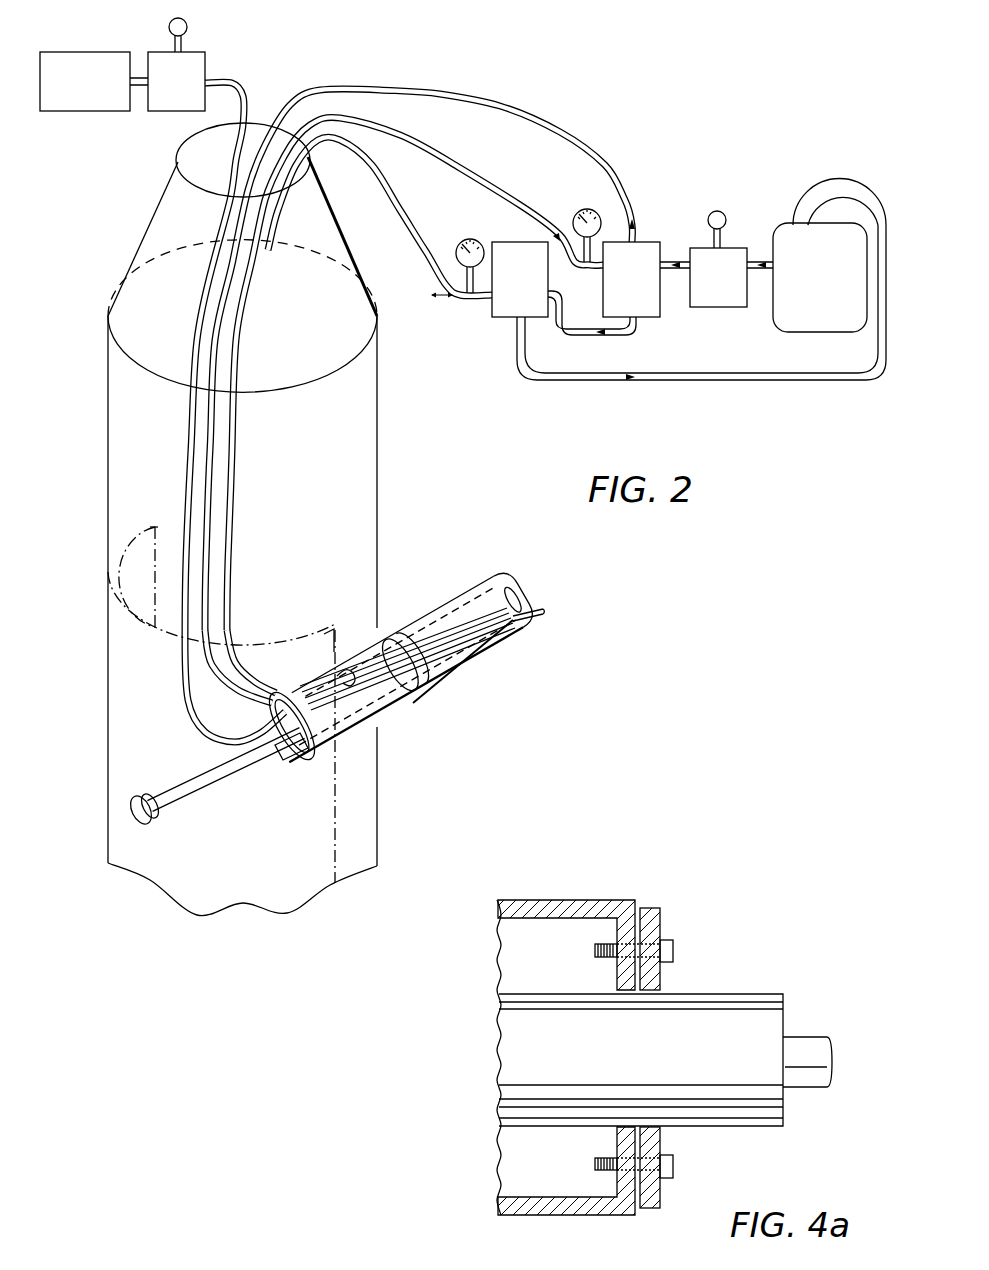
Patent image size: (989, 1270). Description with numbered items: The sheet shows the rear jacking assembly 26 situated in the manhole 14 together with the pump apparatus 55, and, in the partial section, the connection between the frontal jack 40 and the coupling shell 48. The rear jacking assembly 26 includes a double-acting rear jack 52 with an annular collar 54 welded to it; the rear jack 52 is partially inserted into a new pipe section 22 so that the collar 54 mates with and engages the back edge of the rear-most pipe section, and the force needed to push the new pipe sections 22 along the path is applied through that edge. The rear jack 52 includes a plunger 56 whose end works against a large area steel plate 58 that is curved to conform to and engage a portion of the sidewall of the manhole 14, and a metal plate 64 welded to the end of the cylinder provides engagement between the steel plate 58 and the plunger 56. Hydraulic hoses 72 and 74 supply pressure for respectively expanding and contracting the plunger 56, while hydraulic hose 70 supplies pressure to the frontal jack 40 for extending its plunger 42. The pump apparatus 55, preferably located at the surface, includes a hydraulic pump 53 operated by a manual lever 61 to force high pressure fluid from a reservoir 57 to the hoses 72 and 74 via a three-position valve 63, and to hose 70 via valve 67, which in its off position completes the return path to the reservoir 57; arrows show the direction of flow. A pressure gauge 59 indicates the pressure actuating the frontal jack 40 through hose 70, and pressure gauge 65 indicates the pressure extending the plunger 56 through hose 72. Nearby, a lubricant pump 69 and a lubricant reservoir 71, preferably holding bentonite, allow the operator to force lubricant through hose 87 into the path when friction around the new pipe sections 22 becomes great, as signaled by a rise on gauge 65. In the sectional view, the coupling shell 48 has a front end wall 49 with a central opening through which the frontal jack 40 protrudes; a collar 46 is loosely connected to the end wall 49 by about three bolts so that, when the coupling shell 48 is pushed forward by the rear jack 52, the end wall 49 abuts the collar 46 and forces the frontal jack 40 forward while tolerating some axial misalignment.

In FIG. 2, the manhole 14 is at (338, 214).
In FIG. 2, the new pipe section 22 is at (440, 604).
In FIG. 2, the rear jacking assembly 26 is at (348, 588).
In FIG. 4a, the frontal jack 40 is at (588, 1057).
In FIG. 4a, the plunger 42 is at (803, 1037).
In FIG. 4a, the collar 46 is at (660, 918).
In FIG. 4a, the coupling shell 48 is at (568, 900).
In FIG. 4a, the front end wall 49 is at (617, 976).
In FIG. 2, the rear jack 52 is at (293, 763).
In FIG. 2, the hydraulic pump 53 is at (733, 248).
In FIG. 2, the annular collar 54 is at (293, 698).
In FIG. 2, the pump apparatus 55 is at (700, 93).
In FIG. 2, the plunger 56 is at (180, 785).
In FIG. 2, the reservoir 57 is at (793, 223).
In FIG. 2, the steel plate 58 is at (148, 525).
In FIG. 2, the pressure gauge 59 is at (462, 240).
In FIG. 2, the manual lever 61 is at (718, 211).
In FIG. 2, the valve 63 is at (650, 242).
In FIG. 2, the metal plate 64 is at (160, 813).
In FIG. 2, the pressure gauge 65 is at (582, 209).
In FIG. 2, the valve 67 is at (490, 305).
In FIG. 2, the lubricant pump 69 is at (197, 52).
In FIG. 2, the hydraulic hose 70 is at (417, 237).
In FIG. 2, the lubricant reservoir 71 is at (105, 52).
In FIG. 2, the hydraulic hose 72 is at (473, 168).
In FIG. 2, the hydraulic hose 74 is at (607, 162).
In FIG. 2, the hose 87 is at (195, 325).